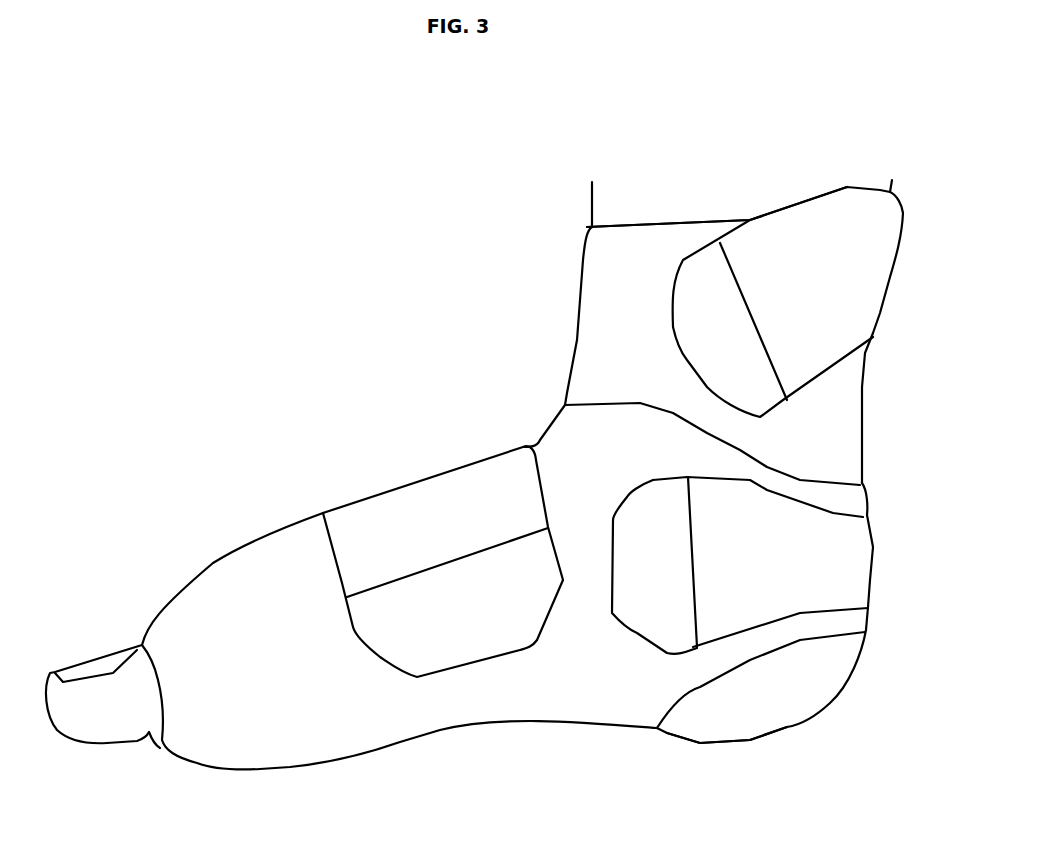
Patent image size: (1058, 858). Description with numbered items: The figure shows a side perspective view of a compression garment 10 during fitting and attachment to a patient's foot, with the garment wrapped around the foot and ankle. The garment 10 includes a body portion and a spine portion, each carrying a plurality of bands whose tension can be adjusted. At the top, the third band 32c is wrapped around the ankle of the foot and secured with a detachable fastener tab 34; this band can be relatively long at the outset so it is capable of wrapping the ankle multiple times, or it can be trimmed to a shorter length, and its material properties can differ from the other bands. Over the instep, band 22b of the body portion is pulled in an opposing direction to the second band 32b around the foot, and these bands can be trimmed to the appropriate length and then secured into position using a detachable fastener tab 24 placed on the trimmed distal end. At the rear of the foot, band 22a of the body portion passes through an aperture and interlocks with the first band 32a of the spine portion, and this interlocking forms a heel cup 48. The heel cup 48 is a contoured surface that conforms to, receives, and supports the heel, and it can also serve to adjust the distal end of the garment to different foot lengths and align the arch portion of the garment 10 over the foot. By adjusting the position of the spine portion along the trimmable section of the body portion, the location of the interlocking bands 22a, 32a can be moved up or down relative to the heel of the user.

The compression garment 10 is at (165, 355).
The band 22a is at (843, 555).
The band 22b is at (423, 510).
The detachable fastener tab 24 is at (410, 637).
The first band 32a is at (840, 620).
The second band 32b is at (223, 637).
The third band 32c is at (798, 280).
The detachable fastener tab 34 is at (705, 345).
The heel cup 48 is at (705, 752).